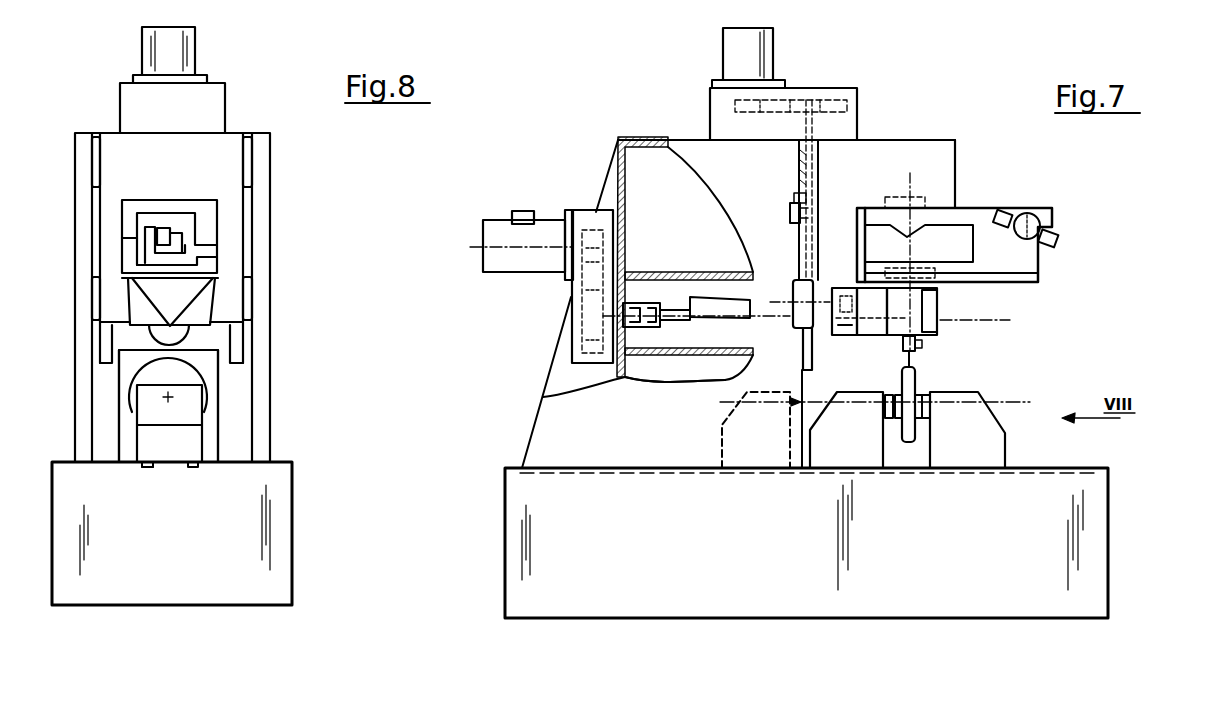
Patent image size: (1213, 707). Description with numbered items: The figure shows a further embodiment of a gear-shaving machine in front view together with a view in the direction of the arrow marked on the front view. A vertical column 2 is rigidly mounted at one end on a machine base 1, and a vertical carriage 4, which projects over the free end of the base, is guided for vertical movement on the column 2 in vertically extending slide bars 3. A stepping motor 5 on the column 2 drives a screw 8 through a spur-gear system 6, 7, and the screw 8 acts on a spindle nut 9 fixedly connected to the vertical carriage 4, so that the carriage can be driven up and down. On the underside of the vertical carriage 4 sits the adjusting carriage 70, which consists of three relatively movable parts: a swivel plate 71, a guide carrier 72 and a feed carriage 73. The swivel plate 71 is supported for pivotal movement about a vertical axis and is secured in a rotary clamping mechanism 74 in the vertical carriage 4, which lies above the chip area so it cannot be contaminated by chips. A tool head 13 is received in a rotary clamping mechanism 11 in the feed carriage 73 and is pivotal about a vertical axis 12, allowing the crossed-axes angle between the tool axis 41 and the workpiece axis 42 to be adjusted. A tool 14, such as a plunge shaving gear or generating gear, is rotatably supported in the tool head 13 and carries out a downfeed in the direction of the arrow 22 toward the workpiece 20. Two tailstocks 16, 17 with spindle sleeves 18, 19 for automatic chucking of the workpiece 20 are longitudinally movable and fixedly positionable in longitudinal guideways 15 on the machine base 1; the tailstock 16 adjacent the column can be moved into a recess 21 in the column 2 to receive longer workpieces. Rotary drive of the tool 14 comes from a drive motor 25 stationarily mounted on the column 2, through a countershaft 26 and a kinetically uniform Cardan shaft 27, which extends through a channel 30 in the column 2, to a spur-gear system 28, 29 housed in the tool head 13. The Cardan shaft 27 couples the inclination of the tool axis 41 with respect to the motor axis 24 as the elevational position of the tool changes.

In FIG. 7, the machine base 1 is at (553, 555).
In FIG. 7, the vertical column 2 is at (595, 428).
In FIG. 7, the slide bars 3 is at (803, 358).
In FIG. 7, the vertical carriage 4 is at (920, 163).
In FIG. 7, the stepping motor 5 is at (756, 41).
In FIG. 7, the spur-gear system 6 is at (735, 105).
In FIG. 7, the spur-gear system 7 is at (825, 105).
In FIG. 7, the screw 8 is at (795, 212).
In FIG. 7, the spindle nut 9 is at (795, 200).
In FIG. 7, the rotary clamping mechanism 11 is at (1022, 264).
In FIG. 7, the vertical axis 12 is at (912, 357).
In FIG. 7, the tool head 13 is at (952, 292).
In FIG. 7, the tool 14 is at (920, 344).
In FIG. 8, the longitudinal guideways 15 is at (145, 468).
In FIG. 7, the longitudinal guideways 15 is at (710, 468).
In FIG. 8, the tailstock 16 is at (168, 443).
In FIG. 7, the tailstock 16 is at (837, 440).
In FIG. 7, the tailstock 17 is at (952, 435).
In FIG. 7, the spindle sleeve 18 is at (888, 413).
In FIG. 7, the spindle sleeve 19 is at (930, 415).
In FIG. 7, the workpiece 20 is at (908, 430).
In FIG. 8, the recess 21 is at (212, 435).
In FIG. 7, the recess 21 is at (665, 370).
In FIG. 7, the arrow 22 is at (882, 340).
In FIG. 7, the motor axis 24 is at (484, 247).
In FIG. 7, the drive motor 25 is at (500, 230).
In FIG. 7, the countershaft 26 is at (583, 285).
In FIG. 7, the Cardan shaft 27 is at (727, 315).
In FIG. 7, the spur-gear system 28 is at (848, 290).
In FIG. 7, the spur-gear system 29 is at (848, 290).
In FIG. 7, the channel 30 is at (708, 335).
In FIG. 7, the tool axis 41 is at (1003, 320).
In FIG. 7, the workpiece axis 42 is at (1020, 402).
In FIG. 7, the adjusting carriage 70 is at (1068, 217).
In FIG. 7, the swivel plate 71 is at (878, 217).
In FIG. 7, the guide carrier 72 is at (1032, 248).
In FIG. 7, the feed carriage 73 is at (968, 248).
In FIG. 7, the rotary clamping mechanism 74 is at (952, 198).